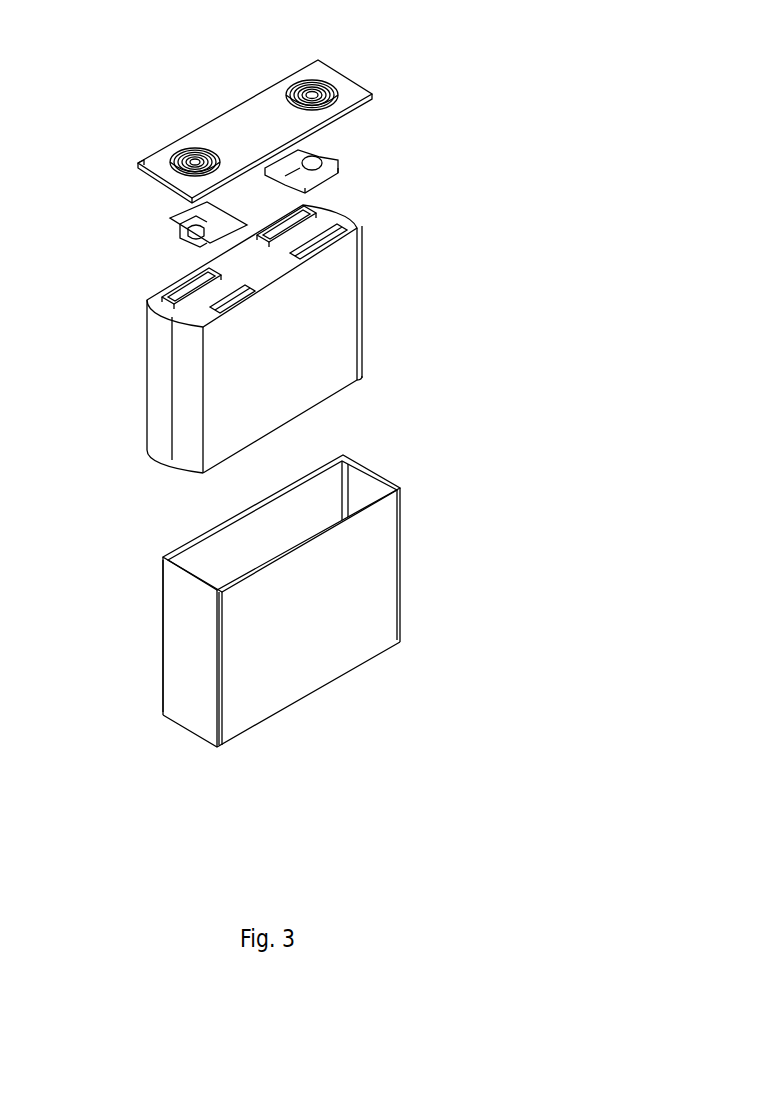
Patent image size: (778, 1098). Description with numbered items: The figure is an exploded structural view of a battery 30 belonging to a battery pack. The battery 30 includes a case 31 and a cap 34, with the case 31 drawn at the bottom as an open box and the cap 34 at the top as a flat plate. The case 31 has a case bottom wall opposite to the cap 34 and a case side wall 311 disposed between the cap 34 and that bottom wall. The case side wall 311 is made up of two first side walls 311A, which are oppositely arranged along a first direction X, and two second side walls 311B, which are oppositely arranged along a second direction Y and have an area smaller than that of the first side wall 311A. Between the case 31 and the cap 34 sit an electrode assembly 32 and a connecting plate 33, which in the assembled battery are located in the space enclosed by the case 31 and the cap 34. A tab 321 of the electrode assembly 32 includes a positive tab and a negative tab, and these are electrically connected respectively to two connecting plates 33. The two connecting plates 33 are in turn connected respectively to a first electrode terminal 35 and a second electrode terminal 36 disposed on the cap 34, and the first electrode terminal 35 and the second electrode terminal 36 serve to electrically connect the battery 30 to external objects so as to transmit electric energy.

The battery 30 is at (135, 242).
The case 31 is at (276, 664).
The case side wall 311 is at (310, 815).
The first side wall 311A is at (233, 715).
The second side wall 311B is at (197, 715).
The electrode assembly 32 is at (292, 329).
The tab 321 is at (333, 228).
The connecting plate 33 is at (327, 173).
The cap 34 is at (353, 96).
The first electrode terminal 35 is at (312, 90).
The second electrode terminal 36 is at (177, 140).